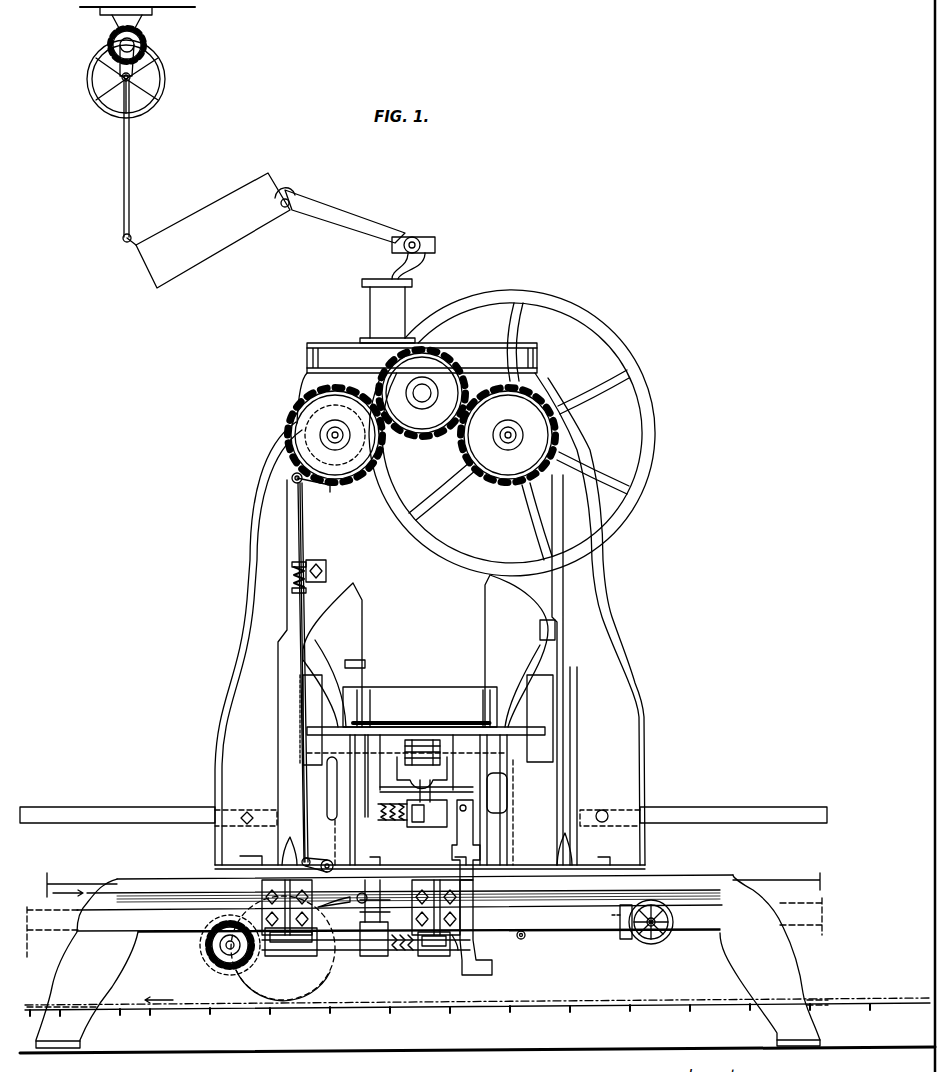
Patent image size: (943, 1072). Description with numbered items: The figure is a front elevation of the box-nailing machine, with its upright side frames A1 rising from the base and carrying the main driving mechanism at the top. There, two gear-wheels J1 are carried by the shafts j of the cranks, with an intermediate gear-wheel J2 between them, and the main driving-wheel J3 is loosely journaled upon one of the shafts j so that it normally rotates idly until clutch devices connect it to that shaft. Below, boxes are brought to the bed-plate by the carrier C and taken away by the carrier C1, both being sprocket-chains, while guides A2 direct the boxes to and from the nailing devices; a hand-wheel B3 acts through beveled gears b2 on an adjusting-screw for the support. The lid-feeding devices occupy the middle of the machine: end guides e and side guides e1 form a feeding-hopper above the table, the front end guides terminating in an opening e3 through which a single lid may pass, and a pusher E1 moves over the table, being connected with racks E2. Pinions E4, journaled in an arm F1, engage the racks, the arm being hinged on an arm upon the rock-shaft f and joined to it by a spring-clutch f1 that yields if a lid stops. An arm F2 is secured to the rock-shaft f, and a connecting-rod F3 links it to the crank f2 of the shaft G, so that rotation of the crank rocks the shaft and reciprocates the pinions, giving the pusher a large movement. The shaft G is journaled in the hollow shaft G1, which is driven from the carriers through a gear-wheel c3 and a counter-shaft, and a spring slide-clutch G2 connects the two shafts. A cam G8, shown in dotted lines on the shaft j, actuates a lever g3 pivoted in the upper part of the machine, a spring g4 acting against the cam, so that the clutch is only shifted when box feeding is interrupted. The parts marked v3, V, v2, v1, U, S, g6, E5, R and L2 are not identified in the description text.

The pinion gear v3 is at (136, 36).
The wheel V is at (160, 72).
The crank pin v2 is at (121, 77).
The connecting rod v1 is at (131, 148).
The arm U is at (203, 215).
The lever arm S is at (305, 190).
The main driving-wheel J3 is at (625, 346).
The intermediate gear-wheel J2 is at (422, 393).
The gear-wheels J1 is at (300, 402).
The cam G8 is at (310, 430).
The shafts j is at (326, 437).
The upright side frames A1 is at (585, 724).
The spring g4 is at (292, 575).
The lever g6 is at (336, 493).
The end guides e is at (425, 697).
The side guides e1 is at (338, 680).
The opening e3 is at (362, 690).
The pusher E1 is at (372, 724).
The racks E2 is at (430, 724).
The pinions E4 is at (407, 762).
The yoke E5 is at (425, 772).
The arm F1 is at (435, 790).
The rock-shaft f is at (388, 820).
The spring-clutch f1 is at (420, 826).
The arm F2 is at (458, 840).
The rod R is at (322, 818).
The guides A2 is at (160, 812).
The carrier C is at (88, 883).
The carrier C1 is at (770, 880).
The lever g3 is at (210, 962).
The gear-wheel c3 is at (222, 978).
The hollow shaft G1 is at (300, 957).
The spring slide-clutch G2 is at (370, 958).
The shaft G is at (398, 956).
The lever L2 is at (498, 968).
The crank f2 is at (455, 960).
The connecting-rod F3 is at (519, 940).
The hand-wheel B3 is at (660, 940).
The beveled gears b2 is at (626, 940).